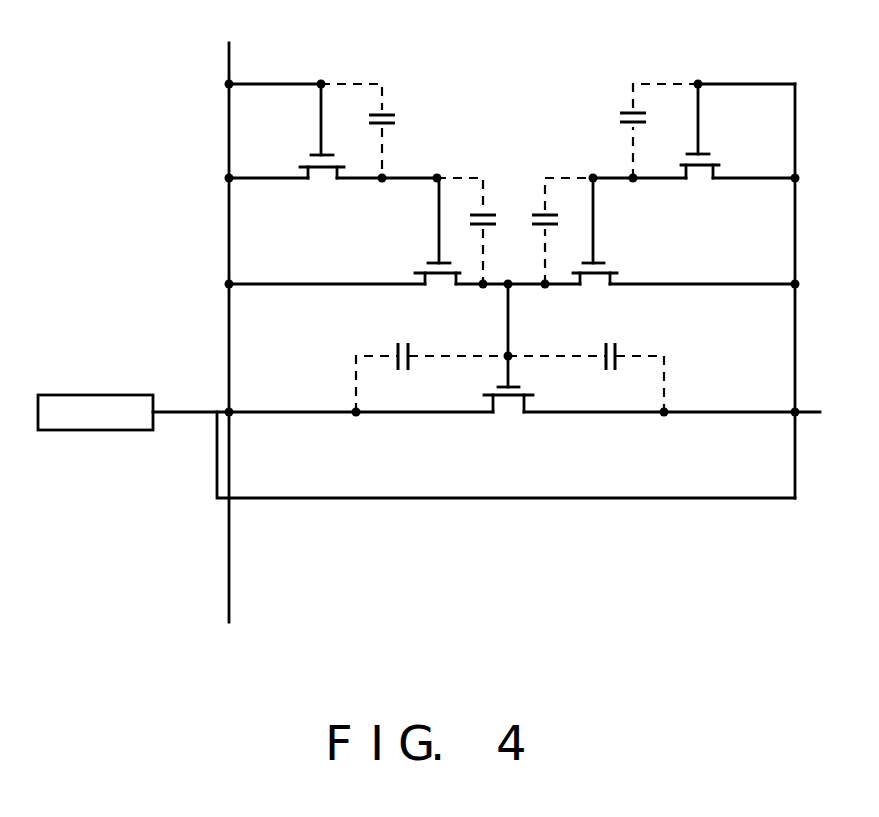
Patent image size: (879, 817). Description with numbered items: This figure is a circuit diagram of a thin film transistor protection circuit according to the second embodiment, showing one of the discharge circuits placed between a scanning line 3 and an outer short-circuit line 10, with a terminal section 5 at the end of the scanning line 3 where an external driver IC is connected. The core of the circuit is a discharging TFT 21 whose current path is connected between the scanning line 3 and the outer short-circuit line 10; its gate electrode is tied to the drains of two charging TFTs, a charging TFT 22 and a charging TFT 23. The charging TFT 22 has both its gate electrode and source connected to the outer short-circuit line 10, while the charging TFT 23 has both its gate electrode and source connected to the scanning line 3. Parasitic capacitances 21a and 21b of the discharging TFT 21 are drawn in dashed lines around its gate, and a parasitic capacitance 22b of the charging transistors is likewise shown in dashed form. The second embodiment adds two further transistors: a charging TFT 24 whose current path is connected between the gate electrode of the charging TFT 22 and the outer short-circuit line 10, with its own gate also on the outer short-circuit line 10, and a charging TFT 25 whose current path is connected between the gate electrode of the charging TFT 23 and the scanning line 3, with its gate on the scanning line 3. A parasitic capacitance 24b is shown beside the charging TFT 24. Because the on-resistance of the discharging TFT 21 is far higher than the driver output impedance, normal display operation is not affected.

The scanning line 3 is at (798, 414).
The terminal section 5 is at (118, 418).
The outer short-circuit line 10 is at (231, 560).
The discharging TFT 21 is at (508, 415).
The parasitic capacitance 21a is at (404, 372).
The parasitic capacitance 21b is at (604, 372).
The charging TFT 22 is at (440, 277).
The parasitic capacitance 22b is at (496, 206).
The charging TFT 23 is at (593, 277).
The charging TFT 24 is at (320, 181).
The parasitic capacitance 24b is at (398, 119).
The charging TFT 25 is at (698, 168).